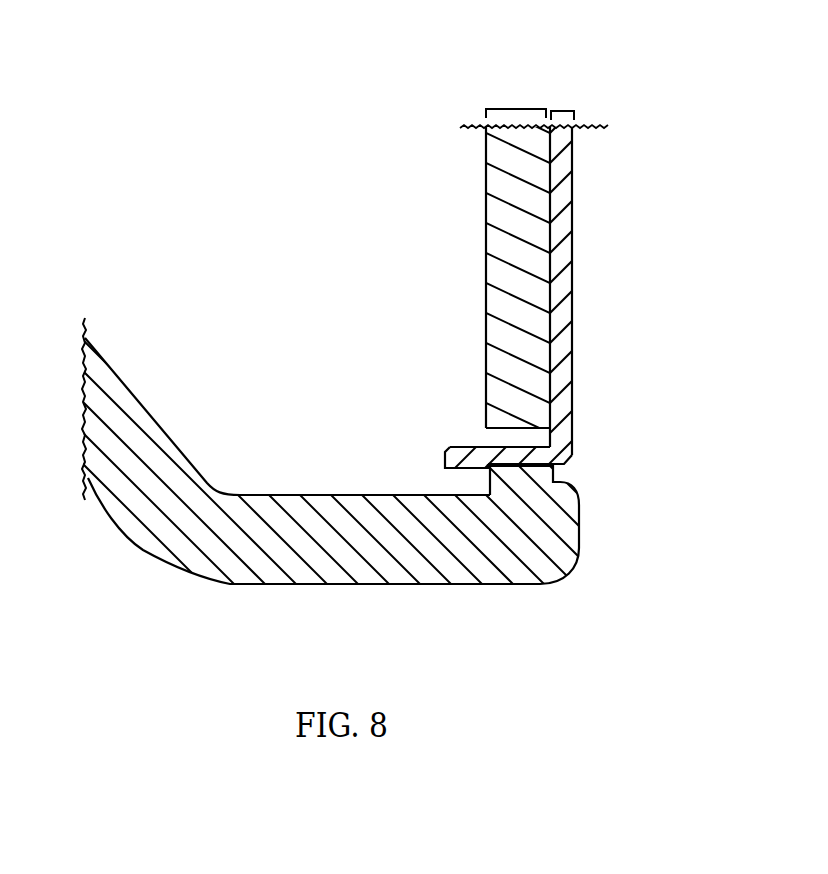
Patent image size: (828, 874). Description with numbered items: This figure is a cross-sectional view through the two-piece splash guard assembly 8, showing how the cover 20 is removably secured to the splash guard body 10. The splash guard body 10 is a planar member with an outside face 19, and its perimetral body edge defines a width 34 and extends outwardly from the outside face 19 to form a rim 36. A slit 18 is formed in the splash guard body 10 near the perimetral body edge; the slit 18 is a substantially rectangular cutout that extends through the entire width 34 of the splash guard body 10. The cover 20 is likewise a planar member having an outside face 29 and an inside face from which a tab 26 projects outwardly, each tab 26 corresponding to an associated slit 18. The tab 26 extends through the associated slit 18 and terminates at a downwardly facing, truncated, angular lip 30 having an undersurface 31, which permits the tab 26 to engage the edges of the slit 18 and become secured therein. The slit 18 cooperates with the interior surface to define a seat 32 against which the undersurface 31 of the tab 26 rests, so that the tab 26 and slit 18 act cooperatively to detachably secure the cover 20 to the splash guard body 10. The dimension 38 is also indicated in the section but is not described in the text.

The splash guard assembly 8 is at (226, 261).
The splash guard body 10 is at (485, 205).
The slit 18 is at (486, 428).
The outside face of the splash guard body 19 is at (485, 273).
The cover 20 is at (572, 187).
The tab 26 is at (507, 444).
The outside face of the cover 29 is at (572, 281).
The angular lip 30 is at (483, 480).
The undersurface 31 is at (557, 483).
The seat 32 is at (483, 494).
The width 34 is at (520, 108).
The rim 36 is at (157, 423).
The second layer thickness 38 is at (563, 108).